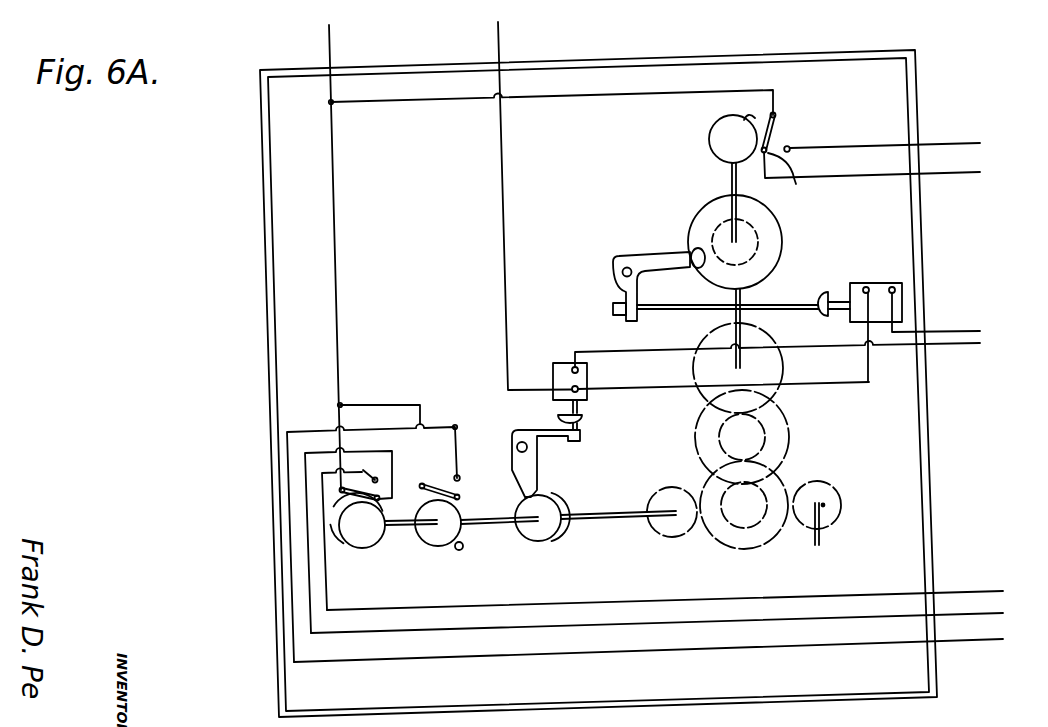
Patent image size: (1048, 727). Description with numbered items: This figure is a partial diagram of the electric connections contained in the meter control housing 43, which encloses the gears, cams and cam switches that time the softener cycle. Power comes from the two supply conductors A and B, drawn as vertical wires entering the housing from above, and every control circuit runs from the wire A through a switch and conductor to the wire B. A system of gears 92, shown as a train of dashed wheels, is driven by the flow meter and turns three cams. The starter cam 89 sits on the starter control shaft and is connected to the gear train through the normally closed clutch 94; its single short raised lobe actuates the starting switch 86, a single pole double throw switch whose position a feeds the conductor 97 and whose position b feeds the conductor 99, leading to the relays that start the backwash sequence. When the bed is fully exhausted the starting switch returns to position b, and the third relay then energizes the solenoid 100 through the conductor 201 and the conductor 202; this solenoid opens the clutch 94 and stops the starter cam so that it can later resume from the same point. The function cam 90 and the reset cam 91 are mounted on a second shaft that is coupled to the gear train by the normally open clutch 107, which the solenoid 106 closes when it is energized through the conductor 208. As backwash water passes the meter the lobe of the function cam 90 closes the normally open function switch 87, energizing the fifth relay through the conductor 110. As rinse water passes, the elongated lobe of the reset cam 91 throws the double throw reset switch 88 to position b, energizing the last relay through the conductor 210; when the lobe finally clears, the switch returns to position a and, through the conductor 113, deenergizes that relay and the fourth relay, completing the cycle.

The meter control housing 43 is at (660, 58).
The starting switch 86 is at (788, 133).
The starter cam 89 is at (708, 139).
The conductor 97 is at (902, 145).
The conductor 99 is at (889, 168).
The clutch 94 is at (697, 222).
The solenoid 100 is at (877, 283).
The conductor 201 is at (964, 315).
The conductor 208 is at (805, 352).
The conductor 202 is at (849, 383).
The solenoid 106 is at (561, 362).
The system of gears 92 is at (800, 470).
The reset switch 88 is at (396, 488).
The conductor 110 is at (457, 427).
The function switch 87 is at (463, 483).
The reset cam 91 is at (353, 546).
The function cam 90 is at (433, 546).
The clutch 107 is at (533, 541).
The conductor 113 is at (676, 540).
The conductor 210 is at (685, 539).
The supply conductor A is at (327, 247).
The supply conductor B is at (529, 195).
The switch position a is at (789, 146).
The switch position b is at (788, 180).